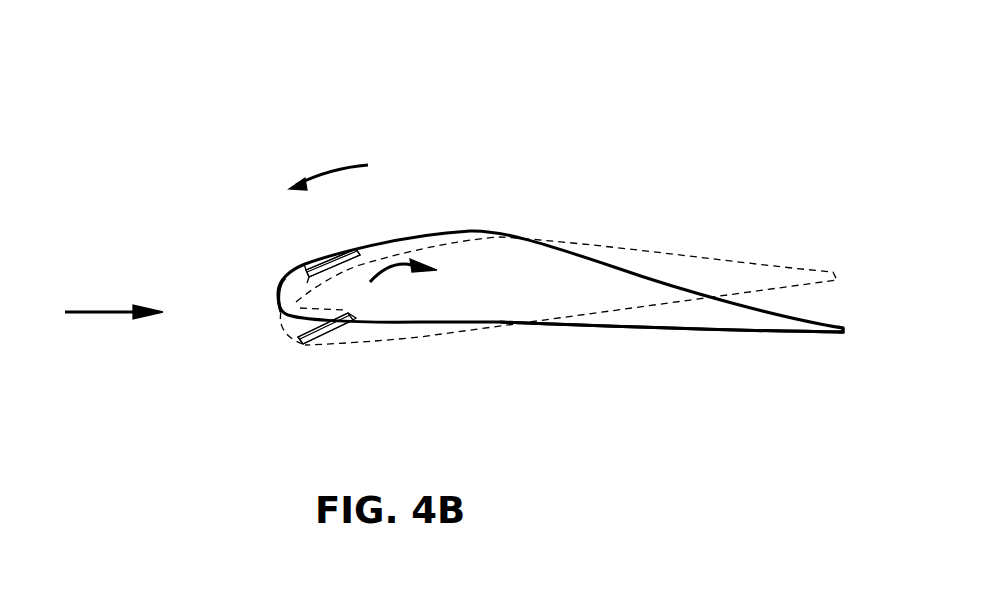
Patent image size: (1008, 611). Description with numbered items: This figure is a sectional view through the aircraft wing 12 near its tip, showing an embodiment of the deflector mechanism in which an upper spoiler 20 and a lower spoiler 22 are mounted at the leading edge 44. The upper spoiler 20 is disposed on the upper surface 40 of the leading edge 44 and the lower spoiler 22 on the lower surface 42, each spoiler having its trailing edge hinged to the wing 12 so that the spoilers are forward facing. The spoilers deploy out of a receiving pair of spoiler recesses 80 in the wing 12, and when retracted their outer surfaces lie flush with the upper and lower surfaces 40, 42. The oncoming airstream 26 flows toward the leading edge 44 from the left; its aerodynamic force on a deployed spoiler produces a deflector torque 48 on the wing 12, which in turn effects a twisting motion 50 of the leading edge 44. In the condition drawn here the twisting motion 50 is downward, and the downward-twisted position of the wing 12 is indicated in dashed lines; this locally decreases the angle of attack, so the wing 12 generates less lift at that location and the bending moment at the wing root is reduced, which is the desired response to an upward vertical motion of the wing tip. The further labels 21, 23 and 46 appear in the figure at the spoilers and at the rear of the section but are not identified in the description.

The wing 12 is at (570, 124).
The upper spoiler 20 is at (308, 262).
The upper deflectable flap 21 is at (332, 252).
The lower spoiler 22 is at (313, 347).
The lower deflectable flap 23 is at (328, 333).
The airstream 26 is at (97, 308).
The upper surface 40 is at (617, 268).
The lower surface 42 is at (687, 330).
The leading edge 44 is at (278, 290).
The trailing edge 46 is at (845, 328).
The deflector torque 48 is at (393, 260).
The twisting motion 50 is at (347, 162).
The spoiler recesses 80 is at (347, 246).